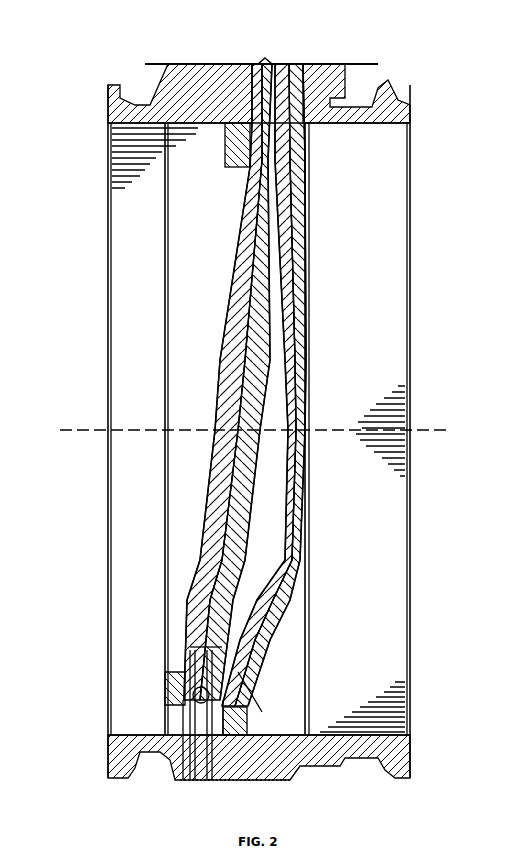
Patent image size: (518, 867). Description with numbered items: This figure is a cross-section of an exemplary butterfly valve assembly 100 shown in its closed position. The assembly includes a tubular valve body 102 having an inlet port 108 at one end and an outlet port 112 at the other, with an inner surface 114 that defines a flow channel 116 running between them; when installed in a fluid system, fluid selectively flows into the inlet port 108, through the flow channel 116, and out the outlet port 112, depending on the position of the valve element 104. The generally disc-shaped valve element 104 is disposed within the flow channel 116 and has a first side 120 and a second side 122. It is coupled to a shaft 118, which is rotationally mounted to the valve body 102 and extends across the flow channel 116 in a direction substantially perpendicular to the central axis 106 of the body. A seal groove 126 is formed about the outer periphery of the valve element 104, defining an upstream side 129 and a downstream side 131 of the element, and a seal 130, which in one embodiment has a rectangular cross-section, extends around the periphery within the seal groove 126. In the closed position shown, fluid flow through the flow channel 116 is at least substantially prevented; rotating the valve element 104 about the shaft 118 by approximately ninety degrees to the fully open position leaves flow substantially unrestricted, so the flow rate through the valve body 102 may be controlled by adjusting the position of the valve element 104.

The butterfly valve assembly 100 is at (420, 43).
The valve body 102 is at (396, 129).
The valve element 104 is at (258, 580).
The central axis 106 is at (447, 430).
The inlet port 108 is at (410, 333).
The outlet port 112 is at (106, 340).
The inner surface 114 is at (383, 178).
The flow channel 116 is at (405, 556).
The shaft 118 is at (267, 66).
The first side 120 is at (300, 330).
The second side 122 is at (240, 235).
The seal groove 126 is at (248, 678).
The upstream side 129 is at (245, 745).
The seal 130 is at (238, 126).
The downstream side 131 is at (192, 776).